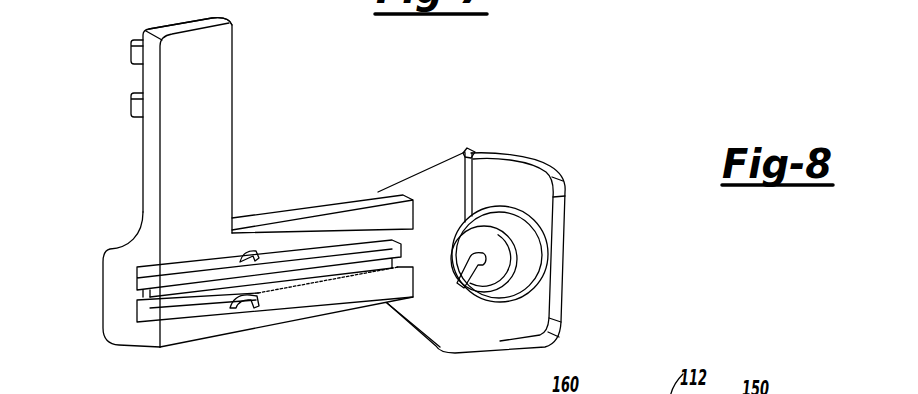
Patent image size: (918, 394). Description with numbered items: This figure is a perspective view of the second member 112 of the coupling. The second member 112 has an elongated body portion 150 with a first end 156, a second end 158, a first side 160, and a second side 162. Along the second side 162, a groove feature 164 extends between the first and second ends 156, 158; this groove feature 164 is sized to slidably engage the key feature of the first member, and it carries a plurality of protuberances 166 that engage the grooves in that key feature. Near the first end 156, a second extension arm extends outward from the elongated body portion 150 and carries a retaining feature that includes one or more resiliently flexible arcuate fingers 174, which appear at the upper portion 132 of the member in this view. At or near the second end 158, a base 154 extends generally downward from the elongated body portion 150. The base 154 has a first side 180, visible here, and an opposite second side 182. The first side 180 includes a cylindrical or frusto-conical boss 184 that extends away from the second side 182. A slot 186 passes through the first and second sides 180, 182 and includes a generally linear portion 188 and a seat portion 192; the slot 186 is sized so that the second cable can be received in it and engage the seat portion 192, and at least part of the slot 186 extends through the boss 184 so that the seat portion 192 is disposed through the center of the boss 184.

The second member 112 is at (93, 202).
The upper portion of plate 132 is at (171, 20).
The elongated body portion 150 is at (243, 343).
The base 154 is at (578, 210).
The first end 156 is at (107, 268).
The second end 158 is at (377, 192).
The first side 160 is at (262, 217).
The second side 162 is at (288, 238).
The groove feature 164 is at (323, 290).
The protuberances 166 is at (238, 257).
The resiliently flexible arcuate fingers 174 is at (131, 51).
The first side 180 is at (542, 184).
The second side 182 is at (555, 168).
The boss 184 is at (522, 257).
The slot 186 is at (457, 172).
The generally linear portion 188 is at (463, 148).
The seat portion 192 is at (477, 266).